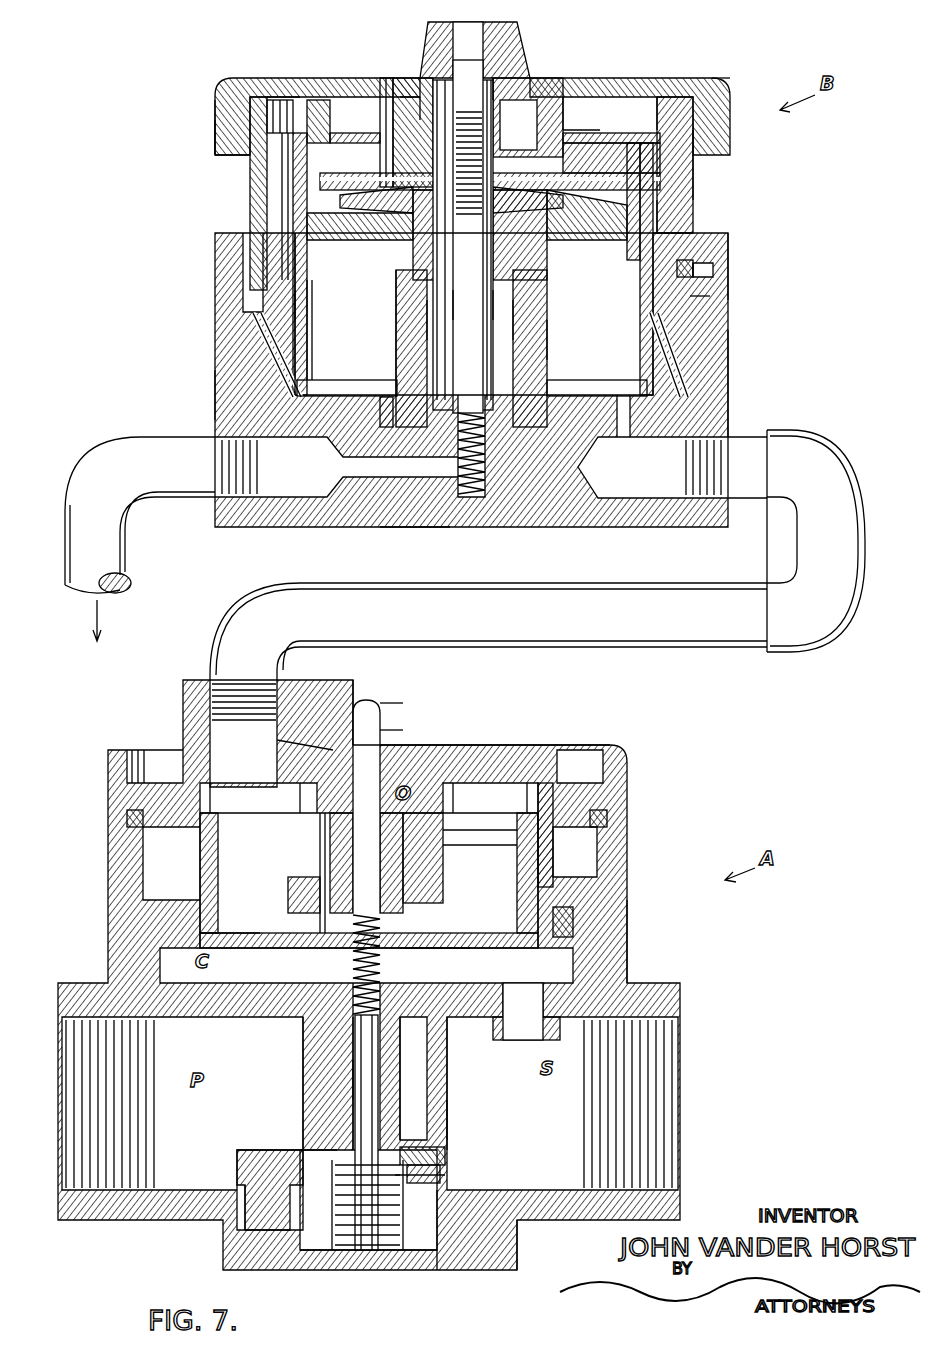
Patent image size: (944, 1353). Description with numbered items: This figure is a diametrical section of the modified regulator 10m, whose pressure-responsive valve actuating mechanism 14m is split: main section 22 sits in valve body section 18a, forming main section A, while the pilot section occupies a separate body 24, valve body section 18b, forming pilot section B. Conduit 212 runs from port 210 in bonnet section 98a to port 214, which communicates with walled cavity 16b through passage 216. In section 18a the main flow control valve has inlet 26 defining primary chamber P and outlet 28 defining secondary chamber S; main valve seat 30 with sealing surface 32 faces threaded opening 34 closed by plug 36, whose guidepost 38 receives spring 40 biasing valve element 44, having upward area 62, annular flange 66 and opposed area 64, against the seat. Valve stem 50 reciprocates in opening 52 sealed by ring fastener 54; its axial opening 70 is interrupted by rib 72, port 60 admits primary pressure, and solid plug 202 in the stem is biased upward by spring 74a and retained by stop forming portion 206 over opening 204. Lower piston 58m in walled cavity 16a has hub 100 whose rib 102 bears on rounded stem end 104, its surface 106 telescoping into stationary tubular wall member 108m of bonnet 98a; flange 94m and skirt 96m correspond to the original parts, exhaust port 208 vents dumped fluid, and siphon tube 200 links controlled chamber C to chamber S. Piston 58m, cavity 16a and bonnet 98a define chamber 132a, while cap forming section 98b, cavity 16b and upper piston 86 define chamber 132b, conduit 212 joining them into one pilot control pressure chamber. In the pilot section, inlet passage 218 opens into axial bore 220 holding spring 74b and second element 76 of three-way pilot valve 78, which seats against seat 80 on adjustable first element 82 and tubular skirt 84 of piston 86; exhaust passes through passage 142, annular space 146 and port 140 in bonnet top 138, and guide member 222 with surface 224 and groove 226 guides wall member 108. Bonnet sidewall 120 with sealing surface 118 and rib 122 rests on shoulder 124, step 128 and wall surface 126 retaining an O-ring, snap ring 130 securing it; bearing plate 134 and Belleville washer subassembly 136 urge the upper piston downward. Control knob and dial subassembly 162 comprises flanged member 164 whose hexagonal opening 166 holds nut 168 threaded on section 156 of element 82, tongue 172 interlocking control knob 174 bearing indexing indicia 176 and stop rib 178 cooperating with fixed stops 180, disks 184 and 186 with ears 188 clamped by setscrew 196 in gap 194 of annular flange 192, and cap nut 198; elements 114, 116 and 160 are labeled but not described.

The modified regulator 10m is at (166, 103).
The modified pressure-responsive valve actuating mechanism 14m is at (199, 380).
The walled cavity 16a is at (640, 850).
The walled cavity 16b is at (735, 350).
The valve body section 18a is at (628, 950).
The valve body section 18b is at (735, 380).
The main section 22 is at (435, 959).
The separate body 24 is at (790, 260).
The inlet 26 is at (70, 1215).
The outlet 28 is at (680, 1160).
The main valve seat 30 is at (300, 1135).
The annular sealing surface 32 is at (448, 1165).
The internally threaded opening 34 is at (480, 1265).
The removable plug 36 is at (517, 1255).
The spring guidepost 38 is at (370, 1265).
The main valve spring 40 is at (345, 1245).
The valve element 44 is at (290, 1150).
The valve stem 50 is at (340, 1070).
The opening 52 is at (350, 968).
The ring fastener 54 is at (305, 1025).
The lower piston 58m is at (205, 950).
The port 60 is at (345, 1080).
The upwardly facing area 62 is at (448, 1150).
The opposed area 64 is at (450, 1178).
The annular flange 66 is at (240, 1195).
The axial opening 70 is at (320, 1050).
The internal annular rib 72 is at (420, 1040).
The spring 74a is at (440, 980).
The spring 74b is at (472, 500).
The second element 76 is at (465, 345).
The three-way pilot valve 78 is at (530, 320).
The seat 80 is at (445, 325).
The adjustable first element 82 is at (455, 303).
The tubular skirt 84 is at (505, 300).
The upper piston 86 is at (400, 300).
The upstanding annular flange 94m is at (230, 825).
The annular skirt 96m is at (600, 840).
The bonnet section 98a is at (480, 750).
The cap forming section 98b is at (690, 235).
The tubular hub 100 is at (410, 830).
The annular rib 102 is at (410, 845).
The rounded upper extremity 104 is at (410, 860).
The cylindrical surface 106 is at (300, 918).
The tubular wall member 108 is at (545, 338).
The tubular wall member 108m is at (330, 800).
The cup 114 is at (330, 272).
The cup wall 116 is at (300, 300).
The cylindrical sealing surface 118 is at (298, 250).
The sidewall 120 is at (250, 250).
The annular rib 122 is at (240, 340).
The shoulder 124 is at (710, 325).
The cylindrical wall surface 126 is at (720, 265).
The step 128 is at (705, 298).
The snap ring 130 is at (700, 285).
The fluidtight chamber 132a is at (376, 865).
The fluidtight interior chamber 132b is at (461, 348).
The bearing plate 134 is at (680, 210).
The Belleville washer subassembly 136 is at (700, 160).
The top of the bonnet 138 is at (660, 190).
The port 140 is at (698, 135).
The passage 142 is at (520, 268).
The annular space 146 is at (440, 285).
The threaded section 156 is at (696, 96).
The boss 160 is at (540, 105).
The control knob and dial subassembly 162 is at (750, 77).
The externally flanged member 164 is at (295, 200).
The hexagonal opening 166 is at (560, 100).
The hexagonal nut 168 is at (285, 160).
The tongue 172 is at (515, 60).
The control knob 174 is at (210, 172).
The indexing indicia 176 is at (285, 97).
The stop forming rib 178 is at (262, 110).
The fixed stop forming members 180 is at (235, 132).
The disk 184 is at (355, 130).
The disk 186 is at (585, 128).
The ears 188 is at (400, 100).
The upstanding annular flange 192 is at (590, 138).
The gap 194 is at (425, 100).
The setscrew 196 is at (405, 95).
The cap nut 198 is at (500, 85).
The siphon tube 200 is at (470, 268).
The solid plug 202 is at (405, 690).
The opening 204 is at (330, 765).
The overhanging stop forming portion 206 is at (400, 720).
The exhaust port 208 is at (395, 730).
The port 210 is at (192, 756).
The conduit 212 is at (690, 583).
The port 214 is at (790, 440).
The passage 216 is at (640, 420).
The inlet passage 218 is at (210, 495).
The axial bore 220 is at (415, 510).
The annular guide member 222 is at (550, 390).
The outer cylindrical surface 224 is at (396, 385).
The annular groove 226 is at (345, 458).